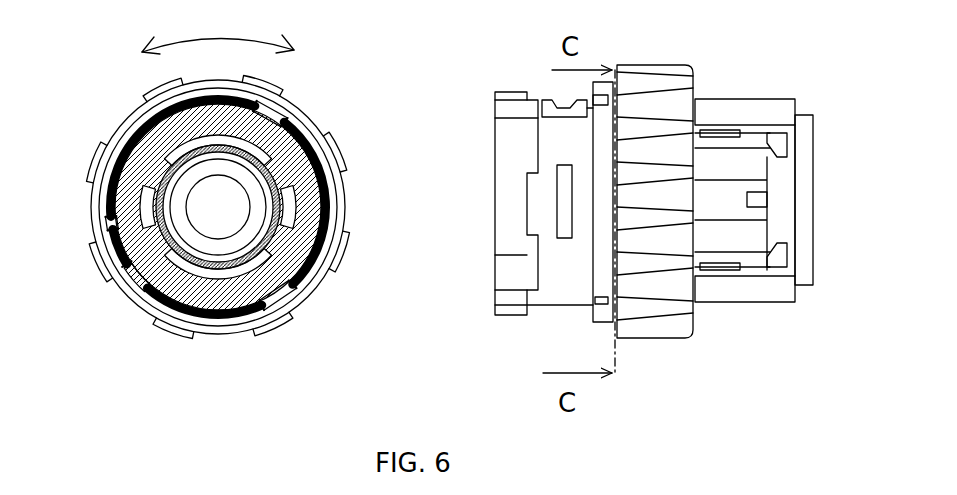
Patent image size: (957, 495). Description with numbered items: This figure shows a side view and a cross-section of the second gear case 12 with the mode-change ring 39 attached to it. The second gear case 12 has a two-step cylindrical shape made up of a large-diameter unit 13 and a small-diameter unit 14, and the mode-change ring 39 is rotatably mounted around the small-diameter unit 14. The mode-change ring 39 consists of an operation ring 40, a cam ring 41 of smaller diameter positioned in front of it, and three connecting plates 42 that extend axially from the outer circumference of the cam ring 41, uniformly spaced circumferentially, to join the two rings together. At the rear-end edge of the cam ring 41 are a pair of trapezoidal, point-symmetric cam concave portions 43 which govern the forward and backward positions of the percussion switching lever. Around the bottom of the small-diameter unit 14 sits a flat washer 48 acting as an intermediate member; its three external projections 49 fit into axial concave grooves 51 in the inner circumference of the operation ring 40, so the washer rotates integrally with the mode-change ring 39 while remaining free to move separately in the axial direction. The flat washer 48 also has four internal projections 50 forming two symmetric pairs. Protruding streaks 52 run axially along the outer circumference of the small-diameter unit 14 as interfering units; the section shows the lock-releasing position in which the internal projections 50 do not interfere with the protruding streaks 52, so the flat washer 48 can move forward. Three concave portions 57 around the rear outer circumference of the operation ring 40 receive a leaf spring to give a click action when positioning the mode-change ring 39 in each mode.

The second gear case 12 is at (543, 310).
The large-diameter unit 13 is at (555, 135).
The small-diameter unit 14 is at (236, 270).
The mode-change ring 39 is at (302, 92).
The operation ring 40 is at (338, 152).
The cam ring 41 is at (790, 215).
The connecting plates 42 is at (762, 115).
The cam concave portions 43 is at (782, 147).
The flat washer 48 is at (282, 240).
The external projections 49 is at (296, 117).
The internal projections 50 is at (150, 147).
The concave grooves 51 is at (298, 98).
The protruding streaks 52 is at (222, 132).
The concave portions 57 is at (112, 267).